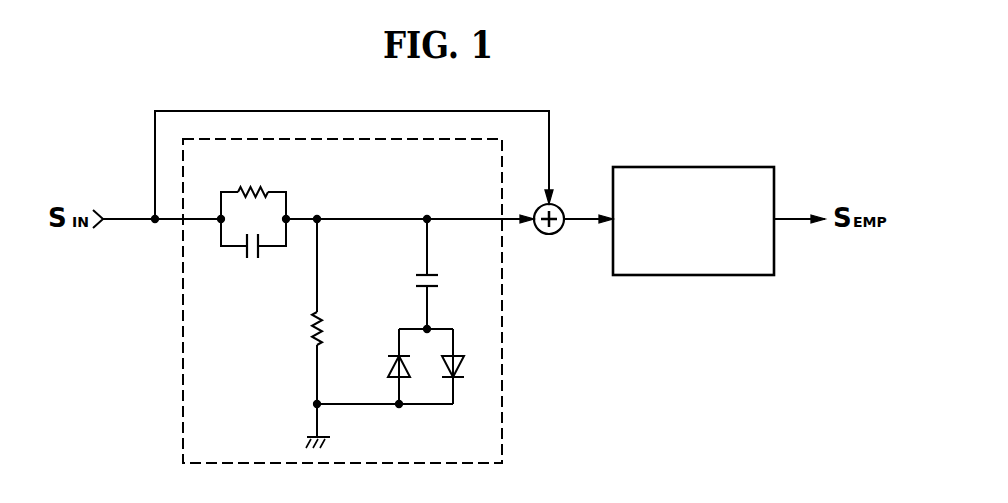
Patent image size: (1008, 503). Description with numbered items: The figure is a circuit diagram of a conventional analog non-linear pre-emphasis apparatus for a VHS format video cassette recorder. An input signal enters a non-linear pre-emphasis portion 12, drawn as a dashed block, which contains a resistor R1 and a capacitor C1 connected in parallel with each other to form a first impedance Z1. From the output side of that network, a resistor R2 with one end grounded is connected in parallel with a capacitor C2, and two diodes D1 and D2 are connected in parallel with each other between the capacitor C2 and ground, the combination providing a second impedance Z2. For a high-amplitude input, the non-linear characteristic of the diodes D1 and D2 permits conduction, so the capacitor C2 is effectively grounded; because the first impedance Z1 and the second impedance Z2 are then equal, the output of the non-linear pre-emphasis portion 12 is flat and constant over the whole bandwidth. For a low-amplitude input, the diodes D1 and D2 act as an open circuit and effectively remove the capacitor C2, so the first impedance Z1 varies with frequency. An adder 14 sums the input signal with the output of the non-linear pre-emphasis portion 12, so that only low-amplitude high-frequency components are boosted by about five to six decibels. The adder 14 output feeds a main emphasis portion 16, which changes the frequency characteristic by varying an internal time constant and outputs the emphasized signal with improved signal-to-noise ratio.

The non-linear pre-emphasis portion 12 is at (503, 322).
The adder 14 is at (561, 207).
The main emphasis portion 16 is at (716, 167).
The resistor R1 is at (254, 179).
The capacitor C1 is at (254, 263).
The first impedance Z1 is at (253, 227).
The resistor R2 is at (299, 311).
The capacitor C2 is at (448, 274).
The second impedance Z2 is at (429, 274).
The diode D1 is at (381, 366).
The diode D2 is at (471, 366).